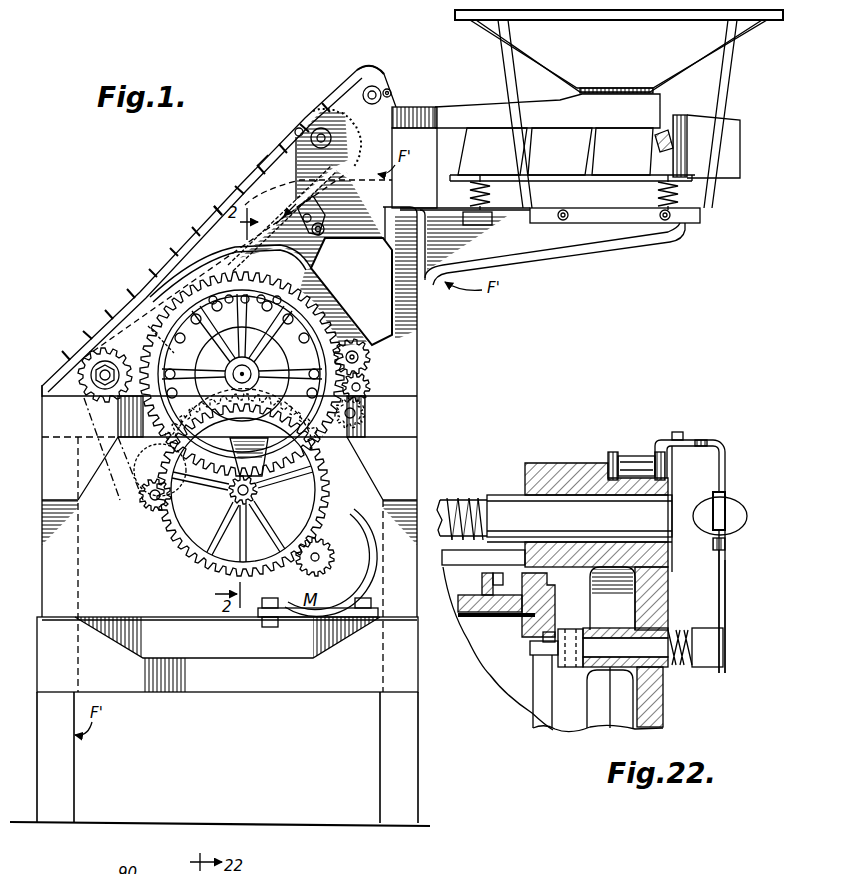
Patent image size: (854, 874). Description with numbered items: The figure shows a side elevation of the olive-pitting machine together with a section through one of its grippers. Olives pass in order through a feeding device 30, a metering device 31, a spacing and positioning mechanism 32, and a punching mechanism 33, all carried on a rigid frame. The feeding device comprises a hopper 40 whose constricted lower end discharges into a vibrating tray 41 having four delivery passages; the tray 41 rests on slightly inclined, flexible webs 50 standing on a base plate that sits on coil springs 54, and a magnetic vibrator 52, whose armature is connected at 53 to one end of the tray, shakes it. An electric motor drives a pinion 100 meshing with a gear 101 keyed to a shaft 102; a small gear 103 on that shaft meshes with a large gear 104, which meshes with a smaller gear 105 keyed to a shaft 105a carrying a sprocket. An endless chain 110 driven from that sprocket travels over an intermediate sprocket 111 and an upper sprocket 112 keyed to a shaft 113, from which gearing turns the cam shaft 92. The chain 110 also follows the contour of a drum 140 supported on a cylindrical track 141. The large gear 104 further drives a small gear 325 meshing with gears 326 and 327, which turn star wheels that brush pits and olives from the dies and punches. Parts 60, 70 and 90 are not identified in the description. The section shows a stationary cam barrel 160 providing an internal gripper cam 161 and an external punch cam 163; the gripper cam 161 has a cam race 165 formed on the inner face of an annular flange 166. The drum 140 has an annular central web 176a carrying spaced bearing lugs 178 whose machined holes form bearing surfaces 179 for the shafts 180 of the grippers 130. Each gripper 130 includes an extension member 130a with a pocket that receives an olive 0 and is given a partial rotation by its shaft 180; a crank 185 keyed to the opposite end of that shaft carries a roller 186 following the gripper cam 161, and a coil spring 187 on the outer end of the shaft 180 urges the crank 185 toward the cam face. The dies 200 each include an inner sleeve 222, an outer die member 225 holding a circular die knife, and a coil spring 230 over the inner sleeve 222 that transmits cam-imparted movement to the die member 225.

In FIG. 1, the feeding device 30 is at (494, 42).
In FIG. 1, the metering device 31 is at (375, 66).
In FIG. 1, the spacing and positioning mechanism 32 is at (177, 243).
In FIG. 1, the punching mechanism 33 is at (144, 337).
In FIG. 1, the hopper 40 is at (619, 51).
In FIG. 1, the vibrating tray 41 is at (486, 110).
In FIG. 1, the webs 50 is at (586, 155).
In FIG. 1, the magnetic vibrator 52 is at (690, 122).
In FIG. 1, the armature connection 53 is at (655, 145).
In FIG. 1, the coil springs 54 is at (470, 195).
In FIG. 1, the housing 60 is at (384, 184).
In FIG. 1, the bar 70 is at (392, 93).
In FIG. 1, the pin bar 90 is at (232, 176).
In FIG. 22, the pin bar 90 is at (726, 462).
In FIG. 1, the cam shaft 92 is at (381, 92).
In FIG. 1, the pinion 100 is at (320, 552).
In FIG. 1, the gear 101 is at (216, 562).
In FIG. 1, the shaft 102 is at (236, 496).
In FIG. 1, the small gear 103 is at (266, 486).
In FIG. 1, the large gear 104 is at (306, 335).
In FIG. 1, the smaller gear 105 is at (150, 508).
In FIG. 1, the shaft 105a is at (160, 510).
In FIG. 1, the endless chain 110 is at (260, 164).
In FIG. 22, the endless chain 110 is at (630, 451).
In FIG. 1, the intermediate sprocket 111 is at (82, 358).
In FIG. 1, the upper sprocket 112 is at (296, 133).
In FIG. 1, the shaft 113 is at (320, 128).
In FIG. 22, the grippers 130 is at (732, 548).
In FIG. 22, the extension member 130a is at (726, 597).
In FIG. 1, the drum 140 is at (303, 335).
In FIG. 22, the drum 140 is at (546, 461).
In FIG. 22, the cylindrical track 141 is at (641, 476).
In FIG. 1, the cam barrel 160 is at (146, 328).
In FIG. 22, the cam barrel 160 is at (486, 663).
In FIG. 22, the internal gripper cam 161 is at (556, 632).
In FIG. 22, the external punch cam 163 is at (501, 597).
In FIG. 22, the cam race 165 is at (537, 699).
In FIG. 22, the annular flange 166 is at (530, 632).
In FIG. 22, the annular central web 176a is at (655, 712).
In FIG. 22, the bearing lugs 178 is at (626, 700).
In FIG. 22, the bearing surfaces 179 is at (611, 670).
In FIG. 22, the gripper shafts 180 is at (609, 645).
In FIG. 22, the crank 185 is at (568, 670).
In FIG. 22, the roller 186 is at (530, 655).
In FIG. 22, the coil spring 187 is at (673, 632).
In FIG. 22, the dies 200 is at (682, 494).
In FIG. 22, the inner sleeve 222 is at (478, 496).
In FIG. 22, the outer die member 225 is at (577, 500).
In FIG. 22, the coil spring 230 is at (455, 498).
In FIG. 1, the small gear 325 is at (372, 388).
In FIG. 1, the gear 326 is at (371, 352).
In FIG. 1, the gear 327 is at (363, 418).
In FIG. 22, the olive 0 is at (732, 504).